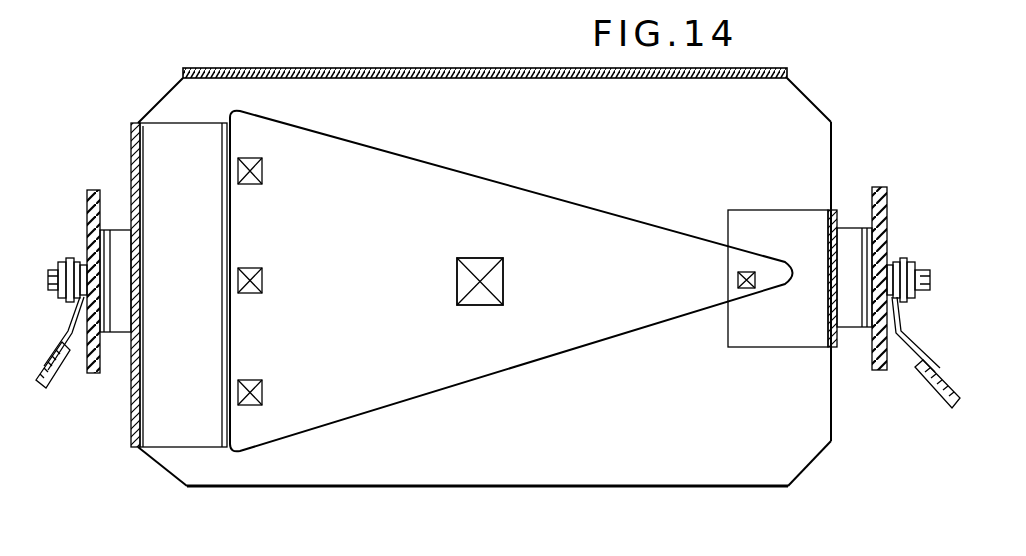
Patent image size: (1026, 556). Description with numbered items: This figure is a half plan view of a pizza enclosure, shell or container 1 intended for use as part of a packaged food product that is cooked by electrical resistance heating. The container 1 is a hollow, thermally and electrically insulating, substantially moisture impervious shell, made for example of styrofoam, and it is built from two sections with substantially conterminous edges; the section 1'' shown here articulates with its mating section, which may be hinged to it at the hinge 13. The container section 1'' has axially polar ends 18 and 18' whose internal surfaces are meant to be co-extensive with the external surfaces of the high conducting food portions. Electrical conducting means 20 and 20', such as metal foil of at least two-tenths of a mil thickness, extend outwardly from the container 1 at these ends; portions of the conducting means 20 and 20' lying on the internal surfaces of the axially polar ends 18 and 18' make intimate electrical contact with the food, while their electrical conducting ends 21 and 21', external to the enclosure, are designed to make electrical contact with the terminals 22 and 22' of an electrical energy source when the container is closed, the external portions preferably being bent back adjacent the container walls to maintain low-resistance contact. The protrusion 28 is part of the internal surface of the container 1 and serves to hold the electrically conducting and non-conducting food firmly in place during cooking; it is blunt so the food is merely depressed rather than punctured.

The enclosure or shell or container 1 is at (503, 247).
The container section 1'' is at (487, 505).
The hinge 13 is at (354, 68).
The axially polar end 18 is at (158, 479).
The axially polar end 18' is at (820, 473).
The electrical conducting means 20 is at (183, 285).
The electrical conducting means 20' is at (776, 300).
The electrical conducting end 21 is at (118, 285).
The electrical conducting end 21' is at (854, 315).
The terminal 22 is at (83, 268).
The terminal 22' is at (898, 279).
The protrusion 28 is at (463, 290).